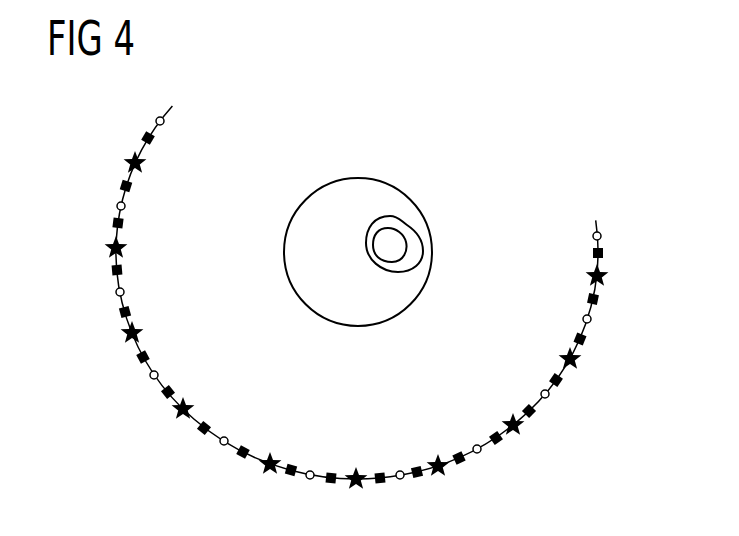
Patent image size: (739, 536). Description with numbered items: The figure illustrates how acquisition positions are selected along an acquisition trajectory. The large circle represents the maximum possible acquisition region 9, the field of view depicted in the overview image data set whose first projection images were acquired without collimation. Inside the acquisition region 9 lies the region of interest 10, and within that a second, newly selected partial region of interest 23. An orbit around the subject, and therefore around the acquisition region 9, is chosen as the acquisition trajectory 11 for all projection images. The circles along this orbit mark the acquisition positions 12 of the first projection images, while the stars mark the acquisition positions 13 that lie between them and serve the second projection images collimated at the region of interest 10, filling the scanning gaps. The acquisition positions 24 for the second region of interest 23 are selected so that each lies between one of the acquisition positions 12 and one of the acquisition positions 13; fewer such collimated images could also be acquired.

The acquisition region 9 is at (357, 177).
The region of interest 10 is at (412, 226).
The second partial region of interest 23 is at (405, 251).
The acquisition trajectory 11 is at (167, 113).
The acquisition positions 12 is at (601, 234).
The acquisition positions 13 is at (518, 427).
The acquisition positions 24 is at (585, 338).